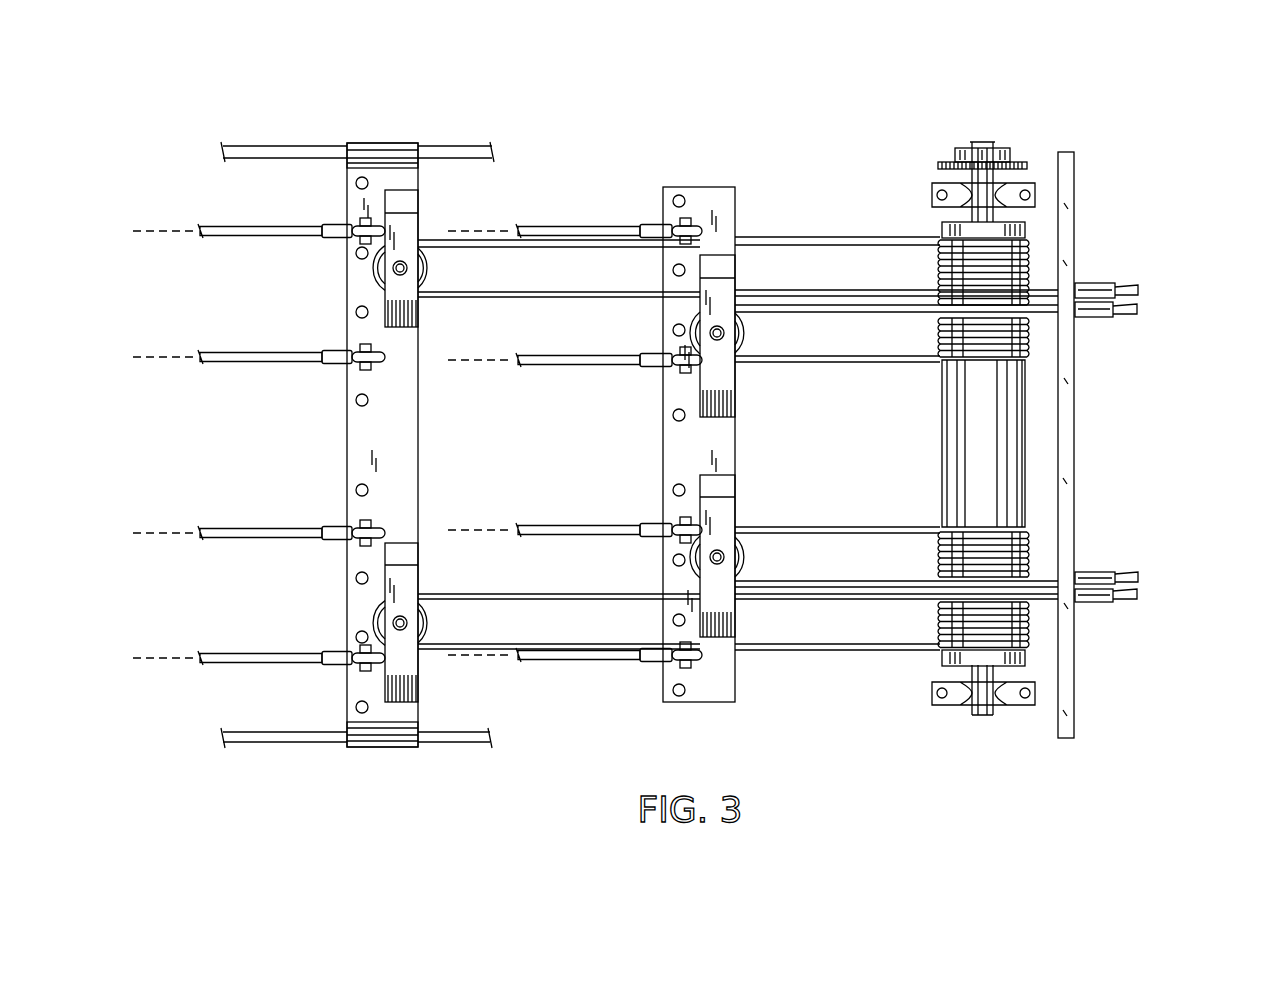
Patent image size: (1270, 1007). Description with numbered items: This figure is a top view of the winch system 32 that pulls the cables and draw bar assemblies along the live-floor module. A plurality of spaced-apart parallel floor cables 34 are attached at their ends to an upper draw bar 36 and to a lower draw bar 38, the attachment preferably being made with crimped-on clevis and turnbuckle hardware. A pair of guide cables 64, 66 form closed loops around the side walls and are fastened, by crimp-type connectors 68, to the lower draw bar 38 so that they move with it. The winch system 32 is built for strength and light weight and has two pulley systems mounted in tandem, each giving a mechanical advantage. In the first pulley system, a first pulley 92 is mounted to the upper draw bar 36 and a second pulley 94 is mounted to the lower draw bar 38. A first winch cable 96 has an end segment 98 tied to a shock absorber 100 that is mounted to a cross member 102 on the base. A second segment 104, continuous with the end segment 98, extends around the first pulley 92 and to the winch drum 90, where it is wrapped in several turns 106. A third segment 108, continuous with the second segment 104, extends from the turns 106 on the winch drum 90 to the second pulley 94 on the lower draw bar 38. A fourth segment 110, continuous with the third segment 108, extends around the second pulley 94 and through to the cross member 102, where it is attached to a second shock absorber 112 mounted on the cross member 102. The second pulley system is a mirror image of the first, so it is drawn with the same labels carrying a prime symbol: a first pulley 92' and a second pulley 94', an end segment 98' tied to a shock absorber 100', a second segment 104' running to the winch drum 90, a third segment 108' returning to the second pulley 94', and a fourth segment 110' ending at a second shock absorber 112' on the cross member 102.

The winch system 32 is at (1178, 268).
The floor cables 34 is at (590, 228).
The upper draw bar 36 is at (718, 189).
The lower draw bar 38 is at (405, 452).
The guide cable 64 is at (262, 144).
The guide cable 66 is at (280, 731).
The crimp-type connectors 68 is at (372, 145).
The winch drum 90 is at (1028, 420).
The first pulley 92 is at (737, 550).
The first pulley 92' is at (752, 354).
The second pulley 94 is at (434, 627).
The second pulley 94' is at (436, 269).
The first winch cable 96 is at (990, 527).
The end segment 98 is at (837, 527).
The end segment 98' is at (801, 234).
The shock absorber 100 is at (1075, 550).
The shock absorber 100' is at (1068, 341).
The cross member 102 is at (1076, 503).
The second segment 104 is at (837, 494).
The second segment 104' is at (837, 397).
The turns 106 is at (1030, 620).
The third segment 108 is at (837, 664).
The third segment 108' is at (801, 192).
The fourth segment 110 is at (559, 686).
The fourth segment 110' is at (540, 206).
The second shock absorber 112 is at (1088, 654).
The second shock absorber 112' is at (1072, 240).